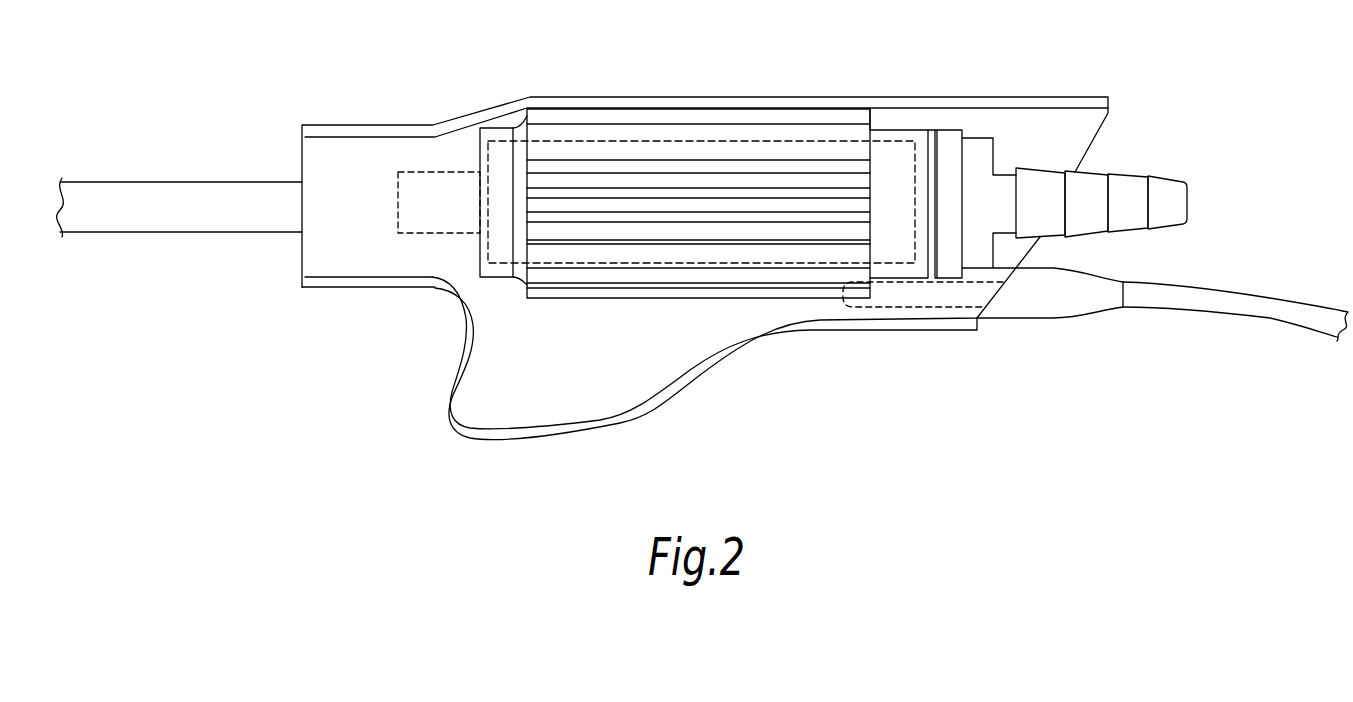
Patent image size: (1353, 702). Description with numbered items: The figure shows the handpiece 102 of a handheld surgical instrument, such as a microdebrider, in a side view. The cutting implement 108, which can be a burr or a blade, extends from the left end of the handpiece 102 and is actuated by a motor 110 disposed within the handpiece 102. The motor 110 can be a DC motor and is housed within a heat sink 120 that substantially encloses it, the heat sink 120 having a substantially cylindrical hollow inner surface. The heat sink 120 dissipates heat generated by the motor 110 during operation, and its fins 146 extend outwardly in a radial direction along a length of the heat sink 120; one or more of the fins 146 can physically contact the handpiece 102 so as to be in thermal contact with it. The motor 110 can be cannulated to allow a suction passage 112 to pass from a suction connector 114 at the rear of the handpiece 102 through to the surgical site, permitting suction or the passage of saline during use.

The handpiece 102 is at (760, 97).
The cutting implement 108 is at (185, 182).
The motor 110 is at (920, 135).
The suction passage 112 is at (1005, 198).
The suction connector 114 is at (1075, 200).
The heat sink 120 is at (870, 213).
The fins 146 is at (590, 118).